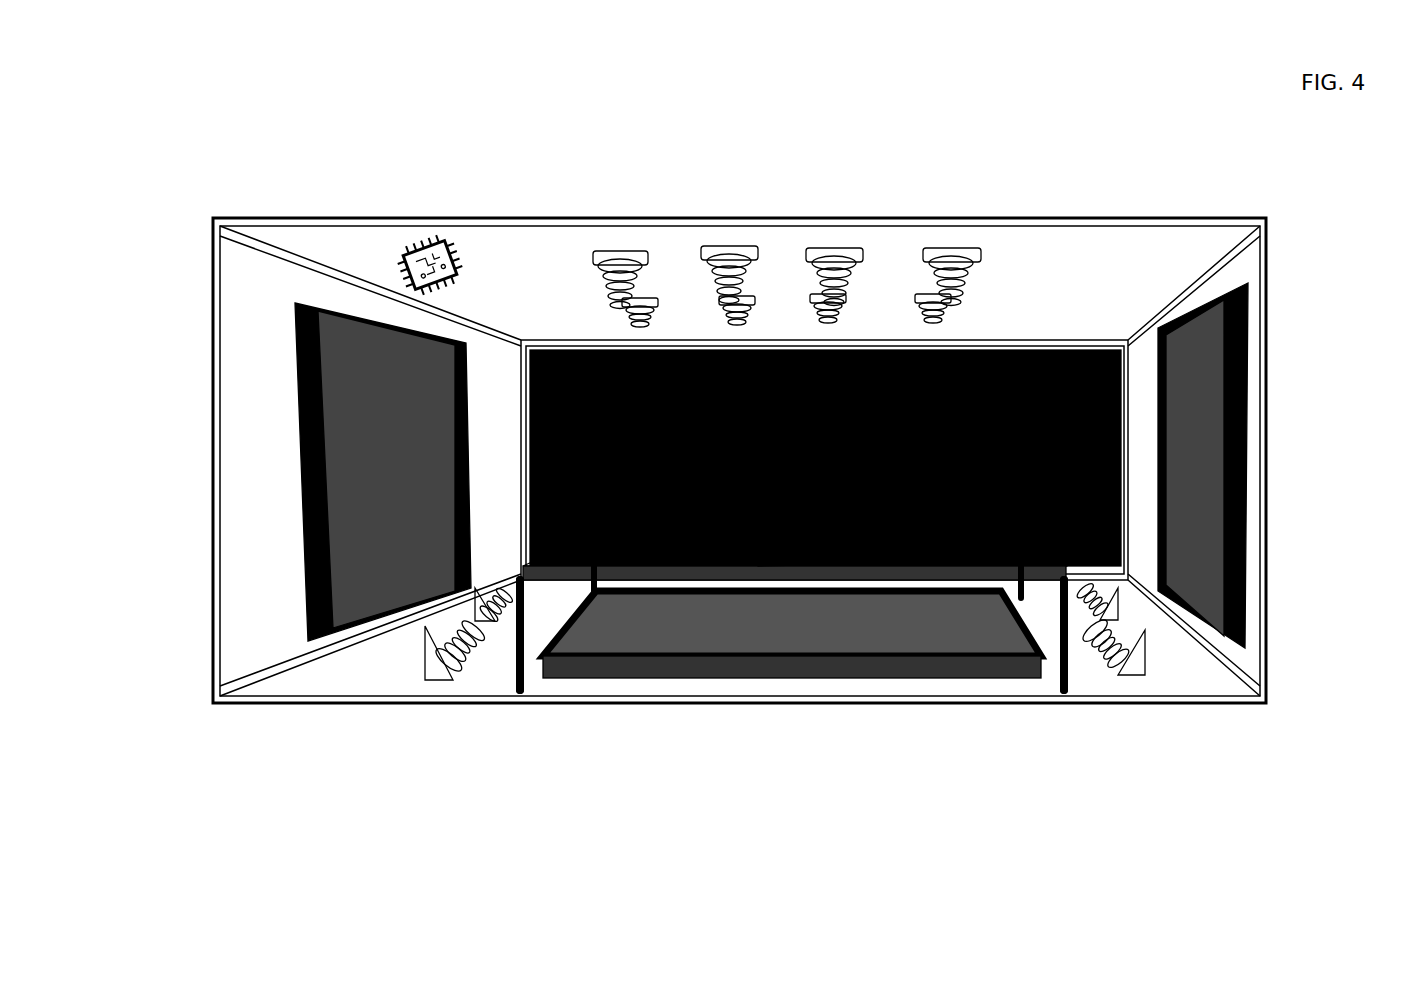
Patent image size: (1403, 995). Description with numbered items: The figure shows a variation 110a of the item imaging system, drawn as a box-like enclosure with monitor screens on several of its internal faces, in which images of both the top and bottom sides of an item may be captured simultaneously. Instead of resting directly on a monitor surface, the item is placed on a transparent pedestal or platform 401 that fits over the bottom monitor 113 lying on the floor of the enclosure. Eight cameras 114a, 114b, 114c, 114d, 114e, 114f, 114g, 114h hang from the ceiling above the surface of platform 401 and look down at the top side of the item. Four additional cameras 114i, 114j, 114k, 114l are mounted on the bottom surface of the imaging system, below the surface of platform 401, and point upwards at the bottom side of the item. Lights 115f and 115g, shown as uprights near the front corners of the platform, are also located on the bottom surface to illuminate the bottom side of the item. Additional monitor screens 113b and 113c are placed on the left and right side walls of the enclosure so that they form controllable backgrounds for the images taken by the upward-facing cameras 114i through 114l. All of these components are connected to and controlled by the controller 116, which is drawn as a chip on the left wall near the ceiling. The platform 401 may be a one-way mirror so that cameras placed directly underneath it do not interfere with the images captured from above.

The item imaging system variation 110a is at (530, 210).
The controller 116 is at (416, 232).
The bottom monitor 113 is at (770, 632).
The monitor screen 113b is at (340, 500).
The monitor screen 113c is at (1190, 527).
The camera 114a is at (600, 245).
The camera 114b is at (718, 240).
The camera 114c is at (830, 245).
The camera 114d is at (940, 245).
The camera 114e is at (620, 312).
The camera 114f is at (718, 312).
The camera 114g is at (815, 312).
The camera 114h is at (917, 312).
The camera 114i is at (445, 628).
The camera 114j is at (445, 655).
The camera 114k is at (1092, 650).
The camera 114l is at (1092, 595).
The light 115f is at (535, 632).
The light 115g is at (1048, 625).
The transparent pedestal or platform 401 is at (625, 550).